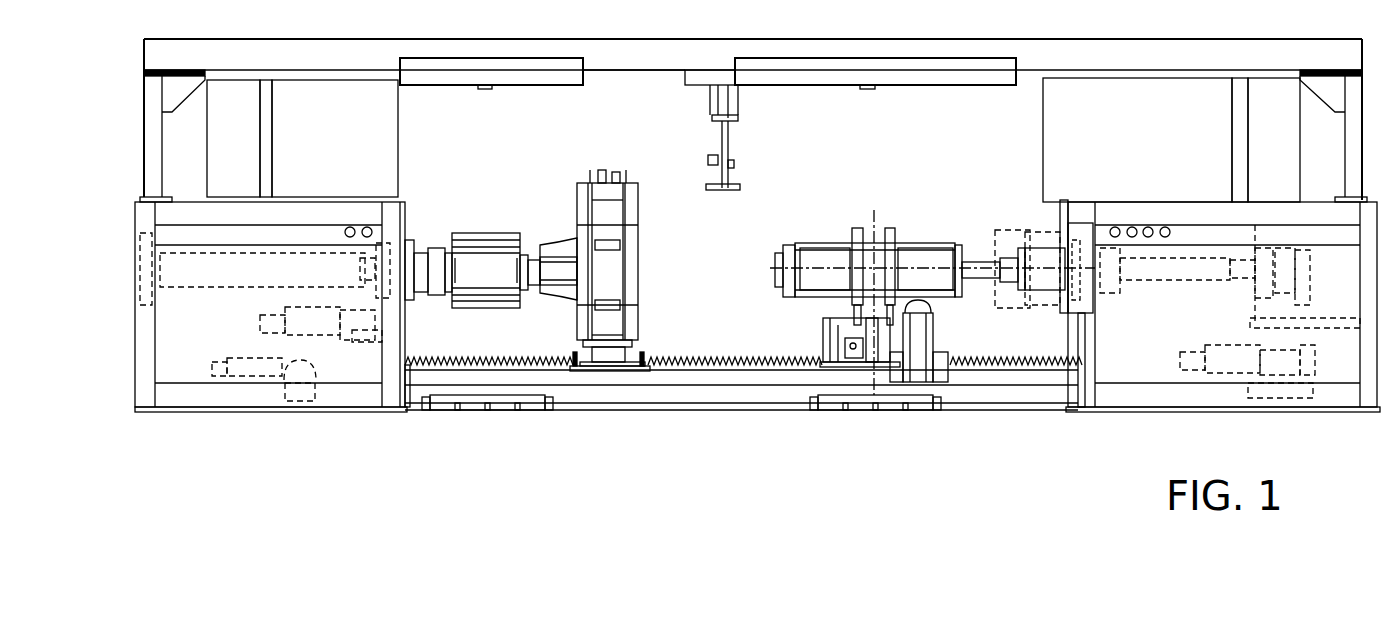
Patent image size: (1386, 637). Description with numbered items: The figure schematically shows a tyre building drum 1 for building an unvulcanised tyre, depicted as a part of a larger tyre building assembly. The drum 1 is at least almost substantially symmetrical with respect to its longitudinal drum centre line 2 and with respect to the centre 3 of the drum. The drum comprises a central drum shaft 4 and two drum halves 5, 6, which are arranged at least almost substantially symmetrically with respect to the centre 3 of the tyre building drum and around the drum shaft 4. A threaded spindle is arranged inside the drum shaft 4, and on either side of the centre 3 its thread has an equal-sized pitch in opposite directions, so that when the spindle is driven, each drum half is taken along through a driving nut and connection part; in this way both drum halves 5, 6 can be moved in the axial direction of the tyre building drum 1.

The tyre building drum 1 is at (757, 225).
The longitudinal drum centre line 2 is at (808, 268).
The centre 3 is at (877, 222).
The central drum shaft 4 is at (980, 263).
The drum half 5 is at (913, 253).
The drum half 6 is at (822, 245).